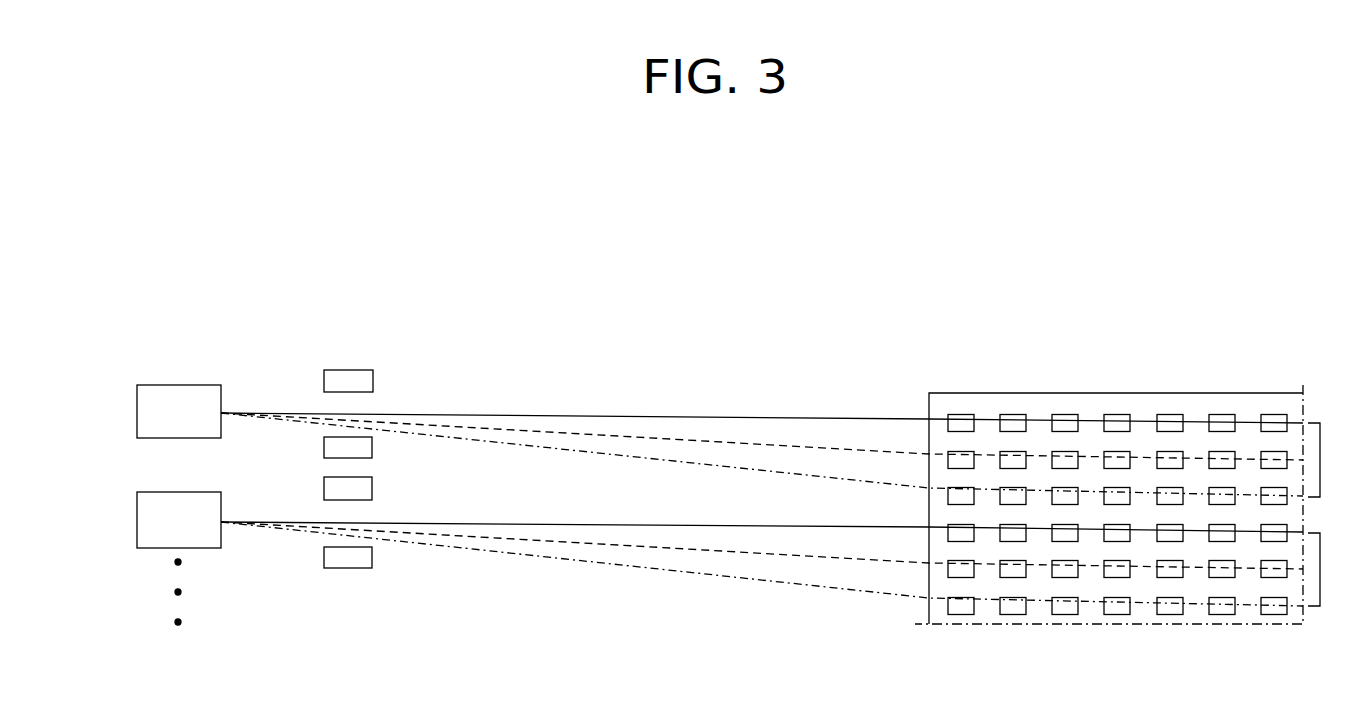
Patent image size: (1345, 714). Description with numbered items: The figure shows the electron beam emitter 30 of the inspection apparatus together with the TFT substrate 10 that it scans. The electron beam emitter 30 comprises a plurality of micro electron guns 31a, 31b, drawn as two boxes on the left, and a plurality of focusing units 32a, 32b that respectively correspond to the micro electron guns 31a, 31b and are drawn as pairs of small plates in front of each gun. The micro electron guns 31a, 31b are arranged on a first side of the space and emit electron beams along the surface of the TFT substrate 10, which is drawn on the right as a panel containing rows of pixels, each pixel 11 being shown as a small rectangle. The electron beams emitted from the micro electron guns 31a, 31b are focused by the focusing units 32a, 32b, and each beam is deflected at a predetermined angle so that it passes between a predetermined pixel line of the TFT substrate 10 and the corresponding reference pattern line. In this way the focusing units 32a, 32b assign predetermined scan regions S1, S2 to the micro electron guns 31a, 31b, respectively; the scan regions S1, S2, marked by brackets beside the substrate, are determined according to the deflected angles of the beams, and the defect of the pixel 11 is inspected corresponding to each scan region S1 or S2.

The electron beam emitter 30 is at (297, 310).
The micro electron gun 31a is at (137, 413).
The micro electron gun 31b is at (137, 522).
The focusing unit 32a is at (369, 437).
The focusing unit 32b is at (365, 500).
The TFT substrate 10 is at (1036, 393).
The pixel 11 is at (957, 418).
The scan region S1 is at (1326, 460).
The scan region S2 is at (1326, 569).